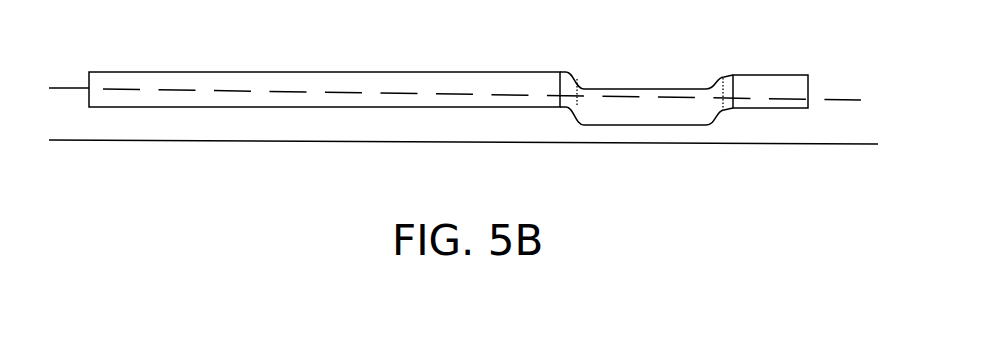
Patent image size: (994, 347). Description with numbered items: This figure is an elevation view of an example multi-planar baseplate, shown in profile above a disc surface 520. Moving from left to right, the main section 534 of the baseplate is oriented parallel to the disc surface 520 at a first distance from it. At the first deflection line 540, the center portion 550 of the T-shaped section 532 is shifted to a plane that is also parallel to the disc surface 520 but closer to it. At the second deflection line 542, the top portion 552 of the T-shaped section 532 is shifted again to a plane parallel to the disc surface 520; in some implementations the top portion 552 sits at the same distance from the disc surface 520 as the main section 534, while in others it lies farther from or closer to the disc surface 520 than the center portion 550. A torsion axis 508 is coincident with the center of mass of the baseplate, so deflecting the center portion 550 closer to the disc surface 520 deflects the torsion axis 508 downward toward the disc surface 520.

The torsion axis 508 is at (66, 88).
The disc surface 520 is at (569, 142).
The T-shaped section 532 is at (829, 95).
The main section 534 is at (310, 72).
The first deflection line 540 is at (578, 102).
The second deflection line 542 is at (723, 85).
The center portion 550 is at (648, 125).
The top portion 552 is at (772, 108).